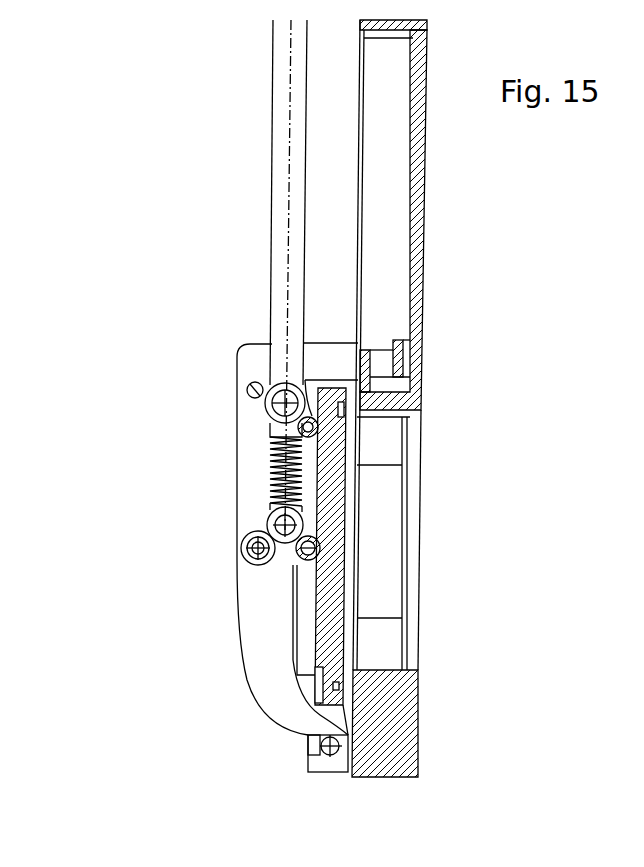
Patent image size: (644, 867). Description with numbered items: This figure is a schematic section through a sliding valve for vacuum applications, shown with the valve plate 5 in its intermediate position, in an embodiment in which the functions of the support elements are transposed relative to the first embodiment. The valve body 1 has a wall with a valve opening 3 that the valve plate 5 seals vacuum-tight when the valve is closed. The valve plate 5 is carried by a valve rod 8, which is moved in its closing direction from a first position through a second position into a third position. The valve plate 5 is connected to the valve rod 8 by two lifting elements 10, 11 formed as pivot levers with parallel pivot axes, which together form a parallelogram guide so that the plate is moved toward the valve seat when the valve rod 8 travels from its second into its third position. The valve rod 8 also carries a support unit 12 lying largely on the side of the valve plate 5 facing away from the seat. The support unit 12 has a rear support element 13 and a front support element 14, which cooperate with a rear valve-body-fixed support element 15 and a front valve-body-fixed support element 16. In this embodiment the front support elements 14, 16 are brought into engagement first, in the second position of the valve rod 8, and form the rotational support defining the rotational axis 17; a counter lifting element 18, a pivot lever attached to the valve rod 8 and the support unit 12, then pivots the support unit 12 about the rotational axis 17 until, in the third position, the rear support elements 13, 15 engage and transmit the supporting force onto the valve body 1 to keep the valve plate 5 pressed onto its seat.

The valve body 1 is at (383, 705).
The valve opening 3 is at (410, 557).
The valve plate 5 is at (335, 607).
The valve rod 8 is at (283, 163).
The lifting element 10 is at (345, 530).
The lifting element 11 is at (310, 418).
The support unit 12 is at (233, 628).
The rear support element 13 is at (415, 350).
The front support element 14 is at (308, 755).
The valve-body-fixed support element 15 is at (410, 330).
The valve-body-fixed support element 16 is at (320, 747).
The rotational axis 17 is at (308, 737).
The counter lifting element 18 is at (265, 537).